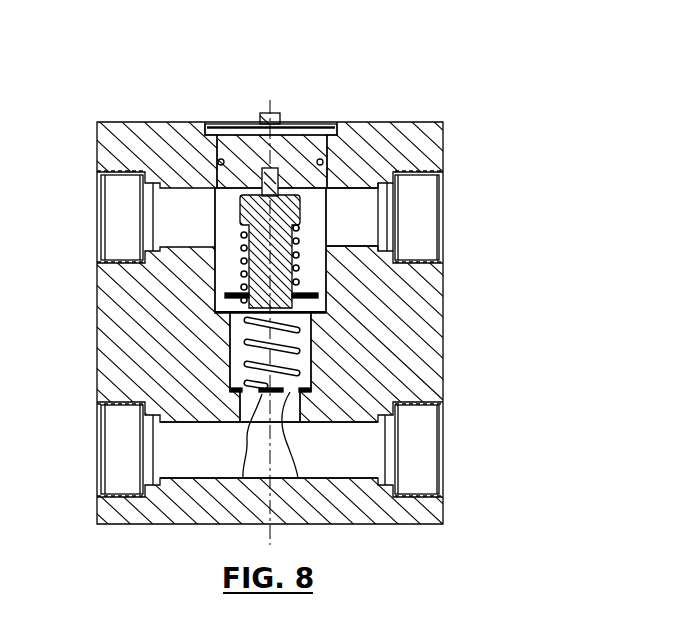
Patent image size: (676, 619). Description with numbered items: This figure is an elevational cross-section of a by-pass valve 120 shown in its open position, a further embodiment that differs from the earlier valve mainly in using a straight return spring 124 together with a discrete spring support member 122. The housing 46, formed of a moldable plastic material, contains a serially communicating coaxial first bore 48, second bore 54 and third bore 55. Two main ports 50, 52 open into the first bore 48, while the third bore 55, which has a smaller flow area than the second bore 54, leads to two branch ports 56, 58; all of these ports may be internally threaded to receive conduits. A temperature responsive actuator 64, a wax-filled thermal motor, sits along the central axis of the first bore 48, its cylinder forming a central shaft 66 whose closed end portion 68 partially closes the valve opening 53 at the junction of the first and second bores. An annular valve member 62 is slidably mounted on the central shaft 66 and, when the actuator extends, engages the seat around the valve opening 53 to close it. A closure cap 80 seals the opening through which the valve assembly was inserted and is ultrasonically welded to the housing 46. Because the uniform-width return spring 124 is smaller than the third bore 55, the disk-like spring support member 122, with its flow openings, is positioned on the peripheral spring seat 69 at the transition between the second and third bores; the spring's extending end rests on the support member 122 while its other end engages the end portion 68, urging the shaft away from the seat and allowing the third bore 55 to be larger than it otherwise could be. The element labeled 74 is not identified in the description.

The by-pass valve 120 is at (449, 103).
The housing 46 is at (138, 130).
The closure cap 80 is at (297, 147).
The temperature responsive actuator 64 is at (300, 192).
The first bore 48 is at (217, 272).
The central shaft 66 is at (245, 257).
The valve member 62 is at (226, 313).
The second bore 54 is at (303, 368).
The closed end portion 68 is at (238, 322).
The return spring 124 is at (305, 345).
The valve opening 53 is at (235, 390).
The spring seat 69 is at (312, 396).
The spring support member 122 is at (287, 438).
The third bore 55 is at (258, 418).
The main port 50 is at (362, 236).
The port shoulder 74 is at (330, 242).
The main port 52 is at (173, 230).
The branch port 58 is at (170, 462).
The branch port 56 is at (425, 478).